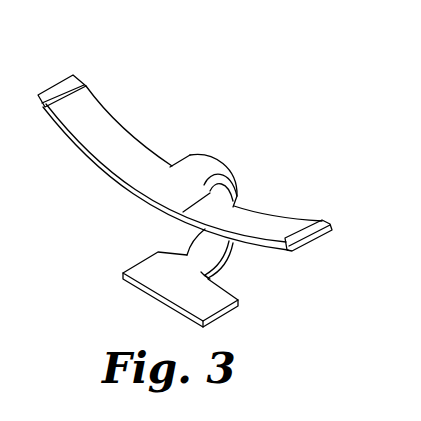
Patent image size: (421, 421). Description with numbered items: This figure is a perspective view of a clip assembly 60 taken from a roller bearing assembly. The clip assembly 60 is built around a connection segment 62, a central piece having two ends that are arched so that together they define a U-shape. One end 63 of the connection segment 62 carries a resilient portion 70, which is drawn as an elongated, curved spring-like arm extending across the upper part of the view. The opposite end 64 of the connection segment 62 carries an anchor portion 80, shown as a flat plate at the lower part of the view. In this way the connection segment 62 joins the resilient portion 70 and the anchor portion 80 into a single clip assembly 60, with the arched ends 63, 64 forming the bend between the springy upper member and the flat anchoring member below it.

The clip assembly 60 is at (235, 98).
The resilient portion 70 is at (243, 215).
The end of connection segment 63 is at (200, 160).
The connection segment 62 is at (213, 245).
The end of connection segment 64 is at (205, 270).
The anchor portion 80 is at (175, 282).